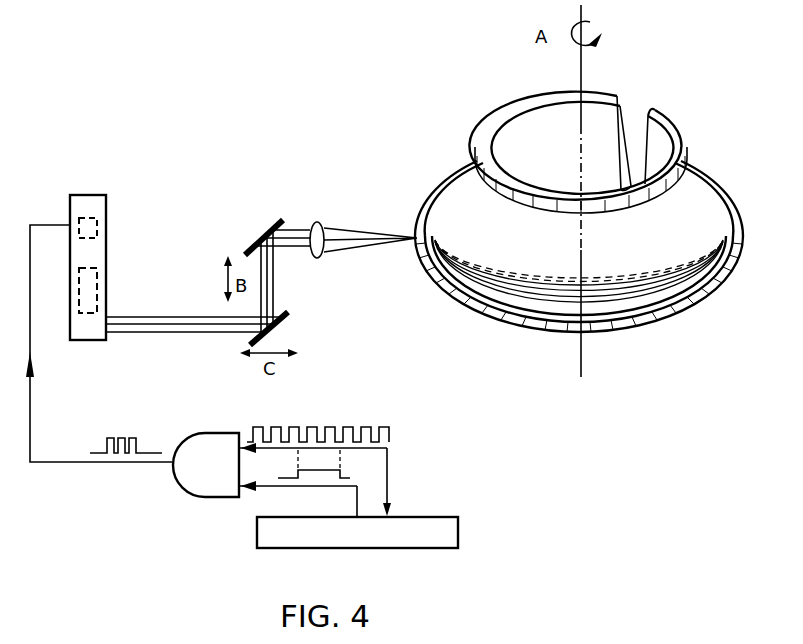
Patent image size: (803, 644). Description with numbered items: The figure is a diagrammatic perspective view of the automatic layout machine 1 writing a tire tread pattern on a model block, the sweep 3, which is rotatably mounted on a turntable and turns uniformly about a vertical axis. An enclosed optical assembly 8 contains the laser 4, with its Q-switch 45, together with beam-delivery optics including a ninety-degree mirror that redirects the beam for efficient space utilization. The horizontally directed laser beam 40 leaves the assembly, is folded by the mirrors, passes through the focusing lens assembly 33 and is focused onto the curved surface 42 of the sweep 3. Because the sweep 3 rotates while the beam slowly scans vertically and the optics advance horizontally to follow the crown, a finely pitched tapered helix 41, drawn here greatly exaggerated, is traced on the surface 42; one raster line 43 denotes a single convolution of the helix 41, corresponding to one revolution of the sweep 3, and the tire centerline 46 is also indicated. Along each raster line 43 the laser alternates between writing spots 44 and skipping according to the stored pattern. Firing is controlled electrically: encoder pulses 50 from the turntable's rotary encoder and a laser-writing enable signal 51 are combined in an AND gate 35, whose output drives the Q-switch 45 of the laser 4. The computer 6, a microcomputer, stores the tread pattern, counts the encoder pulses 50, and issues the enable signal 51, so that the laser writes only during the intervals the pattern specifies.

The automatic layout machine 1 is at (241, 212).
The sweep 3 is at (615, 97).
The laser 4 is at (97, 288).
The computer 6 is at (458, 532).
The optical assembly 8 is at (112, 267).
The focusing lens assembly 33 is at (320, 232).
The AND gate 35 is at (192, 488).
The laser beam 40 is at (193, 323).
The tapered helix 41 is at (638, 262).
The curved surface 42 is at (687, 213).
The raster line 43 is at (640, 288).
The writing spots 44 is at (473, 268).
The Q-switch 45 is at (95, 228).
The tire centerline 46 is at (533, 297).
The encoder pulses 50 is at (300, 427).
The laser writing enable 51 is at (325, 470).